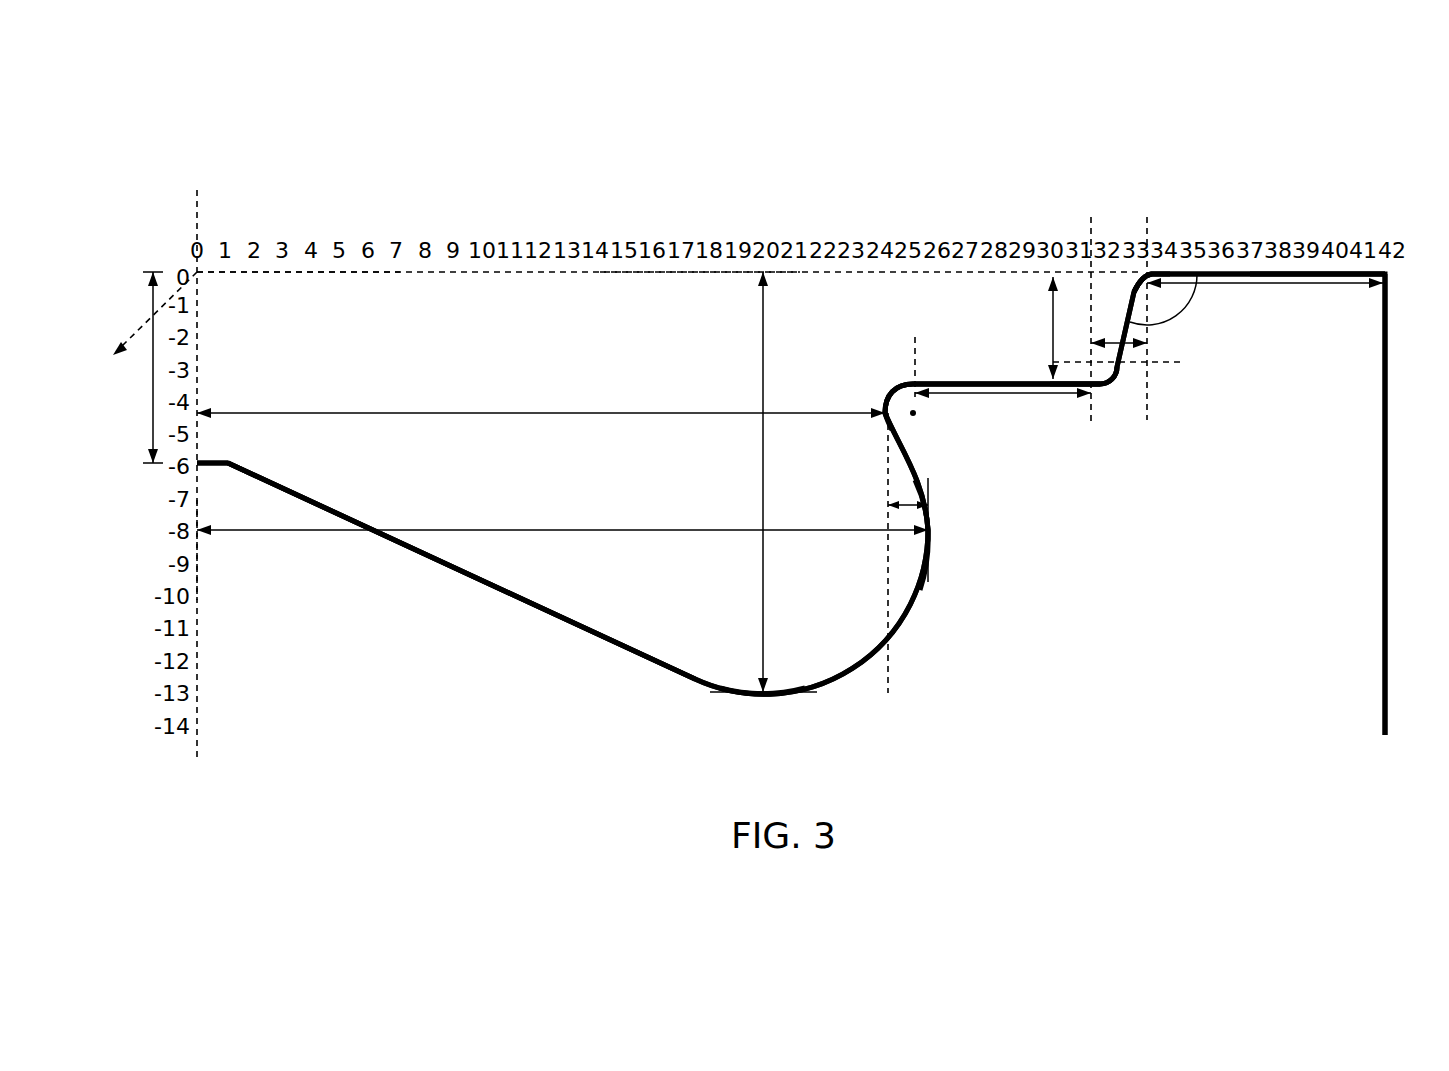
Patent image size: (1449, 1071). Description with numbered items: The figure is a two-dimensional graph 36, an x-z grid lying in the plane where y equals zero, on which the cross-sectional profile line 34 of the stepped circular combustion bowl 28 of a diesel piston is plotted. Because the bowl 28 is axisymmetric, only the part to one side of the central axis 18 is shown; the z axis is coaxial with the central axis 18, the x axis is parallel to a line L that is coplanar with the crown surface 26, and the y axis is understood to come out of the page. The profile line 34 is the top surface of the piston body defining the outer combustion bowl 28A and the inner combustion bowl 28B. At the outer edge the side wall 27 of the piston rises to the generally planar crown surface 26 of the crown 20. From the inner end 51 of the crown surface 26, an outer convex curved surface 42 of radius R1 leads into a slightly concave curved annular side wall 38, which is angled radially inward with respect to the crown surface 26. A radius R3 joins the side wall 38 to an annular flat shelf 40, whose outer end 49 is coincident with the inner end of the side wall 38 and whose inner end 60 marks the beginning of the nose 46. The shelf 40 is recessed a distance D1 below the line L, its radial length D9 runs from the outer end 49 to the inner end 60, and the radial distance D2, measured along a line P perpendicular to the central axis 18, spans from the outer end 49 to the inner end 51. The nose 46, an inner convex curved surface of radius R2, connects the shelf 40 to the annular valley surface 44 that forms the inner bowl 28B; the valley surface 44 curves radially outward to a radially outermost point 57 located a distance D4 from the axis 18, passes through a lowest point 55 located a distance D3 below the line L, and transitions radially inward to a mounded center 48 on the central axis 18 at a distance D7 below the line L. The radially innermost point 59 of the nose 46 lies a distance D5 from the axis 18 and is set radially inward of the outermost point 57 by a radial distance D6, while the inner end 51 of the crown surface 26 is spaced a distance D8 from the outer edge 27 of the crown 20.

The central axis 18 is at (197, 202).
The crown 20 is at (1265, 272).
The crown surface 26 is at (1313, 272).
The side wall 27 is at (1387, 390).
The stepped circular combustion bowl 28 is at (590, 332).
The outer combustion bowl 28A is at (973, 377).
The inner combustion bowl 28B is at (310, 498).
The two-dimensional cross-sectional profile line 34 is at (485, 598).
The graph 36 is at (418, 297).
The curved annular side wall 38 is at (1120, 375).
The annular flat shelf 40 is at (947, 381).
The outer convex curved surface 42 is at (1130, 270).
The annular valley surface 44 is at (893, 635).
The nose 46 is at (884, 395).
The mounded center 48 is at (198, 457).
The outer end of the annular flat surface 49 is at (1090, 395).
The inner end of the crown surface 51 is at (1147, 270).
The lowest point 55 is at (765, 695).
The radially outermost point 57 is at (930, 532).
The radially innermost point 59 is at (890, 418).
The inner end of the annular flat surface 60 is at (886, 380).
The distance D1 is at (1048, 340).
The radial distance D2 is at (1123, 342).
The distance D3 is at (763, 483).
The distance D4 is at (612, 533).
The distance D5 is at (815, 418).
The radial distance D6 is at (930, 493).
The distance D7 is at (153, 393).
The distance D8 is at (1290, 286).
The radial length D9 is at (1008, 398).
The radius of curvature R1 is at (1151, 285).
The radius of curvature R2 is at (916, 416).
The radius of curvature R3 is at (1118, 390).
The line L is at (690, 270).
The line P is at (1180, 362).
The x-axis x is at (237, 272).
The y-axis y is at (150, 322).
The z-axis z is at (195, 553).